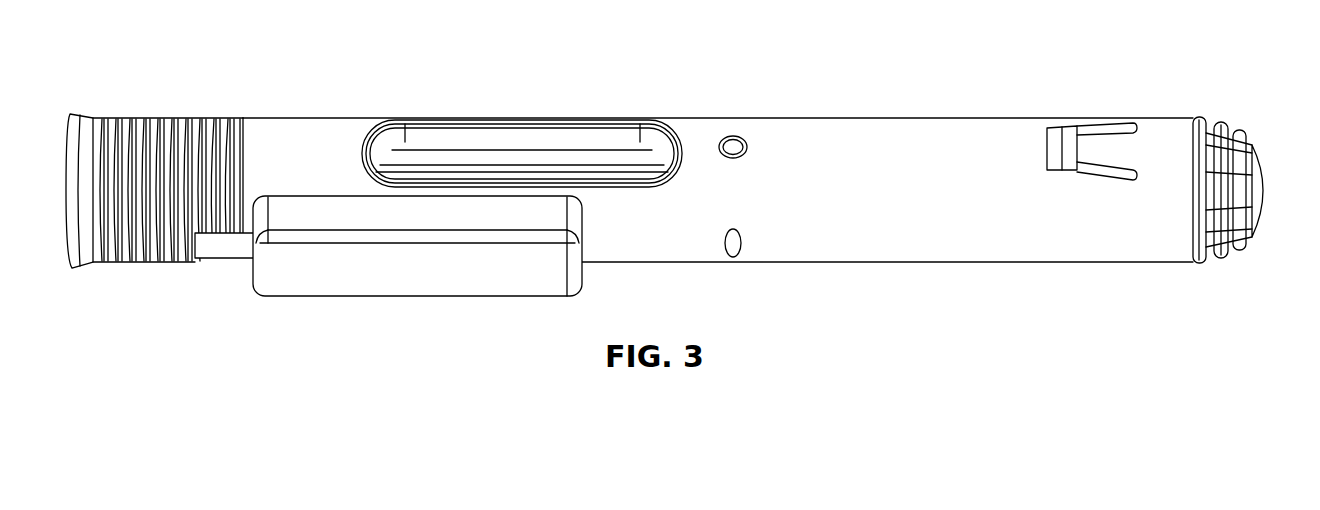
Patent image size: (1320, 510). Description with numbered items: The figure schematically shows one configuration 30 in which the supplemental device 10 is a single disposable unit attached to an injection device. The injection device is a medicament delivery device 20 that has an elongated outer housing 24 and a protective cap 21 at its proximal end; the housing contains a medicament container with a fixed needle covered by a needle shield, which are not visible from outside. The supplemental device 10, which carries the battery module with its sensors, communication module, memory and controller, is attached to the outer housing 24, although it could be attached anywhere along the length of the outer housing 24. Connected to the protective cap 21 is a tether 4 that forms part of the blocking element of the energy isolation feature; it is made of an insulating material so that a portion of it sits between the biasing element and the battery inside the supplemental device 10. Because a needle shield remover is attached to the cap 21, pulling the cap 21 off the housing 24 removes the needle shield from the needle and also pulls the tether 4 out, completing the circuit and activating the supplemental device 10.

The configuration 30 is at (840, 76).
The medicament delivery device 20 is at (926, 138).
The outer housing 24 is at (897, 230).
The protective cap 21 is at (118, 262).
The tether 4 is at (215, 255).
The supplemental device 10 is at (510, 287).